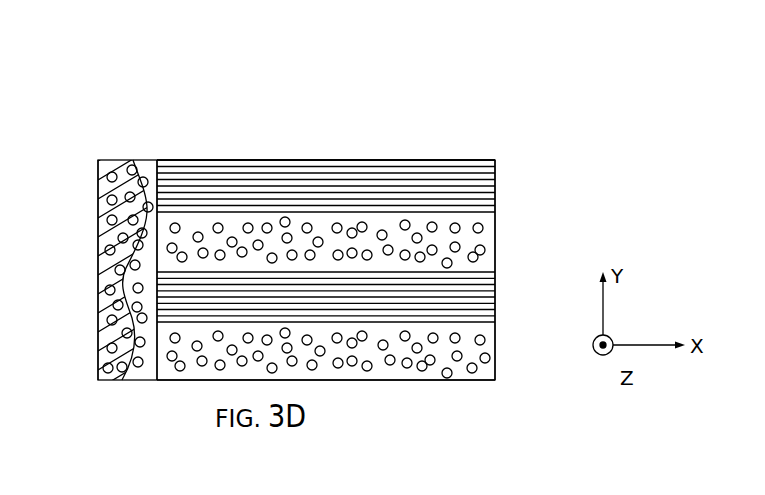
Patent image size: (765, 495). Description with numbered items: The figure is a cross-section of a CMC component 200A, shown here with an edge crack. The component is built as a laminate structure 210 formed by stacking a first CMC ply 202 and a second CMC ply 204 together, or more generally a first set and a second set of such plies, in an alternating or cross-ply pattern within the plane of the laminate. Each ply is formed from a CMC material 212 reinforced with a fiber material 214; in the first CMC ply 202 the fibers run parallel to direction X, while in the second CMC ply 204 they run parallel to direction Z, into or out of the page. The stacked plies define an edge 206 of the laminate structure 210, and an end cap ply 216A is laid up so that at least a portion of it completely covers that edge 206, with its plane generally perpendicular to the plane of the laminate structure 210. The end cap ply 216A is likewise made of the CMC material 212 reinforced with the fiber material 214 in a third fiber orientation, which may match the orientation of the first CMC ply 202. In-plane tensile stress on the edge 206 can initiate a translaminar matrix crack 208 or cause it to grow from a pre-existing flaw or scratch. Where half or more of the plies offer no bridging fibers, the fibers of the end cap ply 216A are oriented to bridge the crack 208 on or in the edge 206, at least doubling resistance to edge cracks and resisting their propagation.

The CMC component 200A is at (565, 142).
The first CMC ply 202 is at (497, 190).
The second CMC ply 204 is at (497, 248).
The edge 206 is at (153, 260).
The translaminar matrix crack 208 is at (98, 185).
The laminate structure 210 is at (403, 150).
The CMC material 212 is at (263, 162).
The fiber material 214 is at (143, 177).
The end cap ply 216A is at (95, 265).